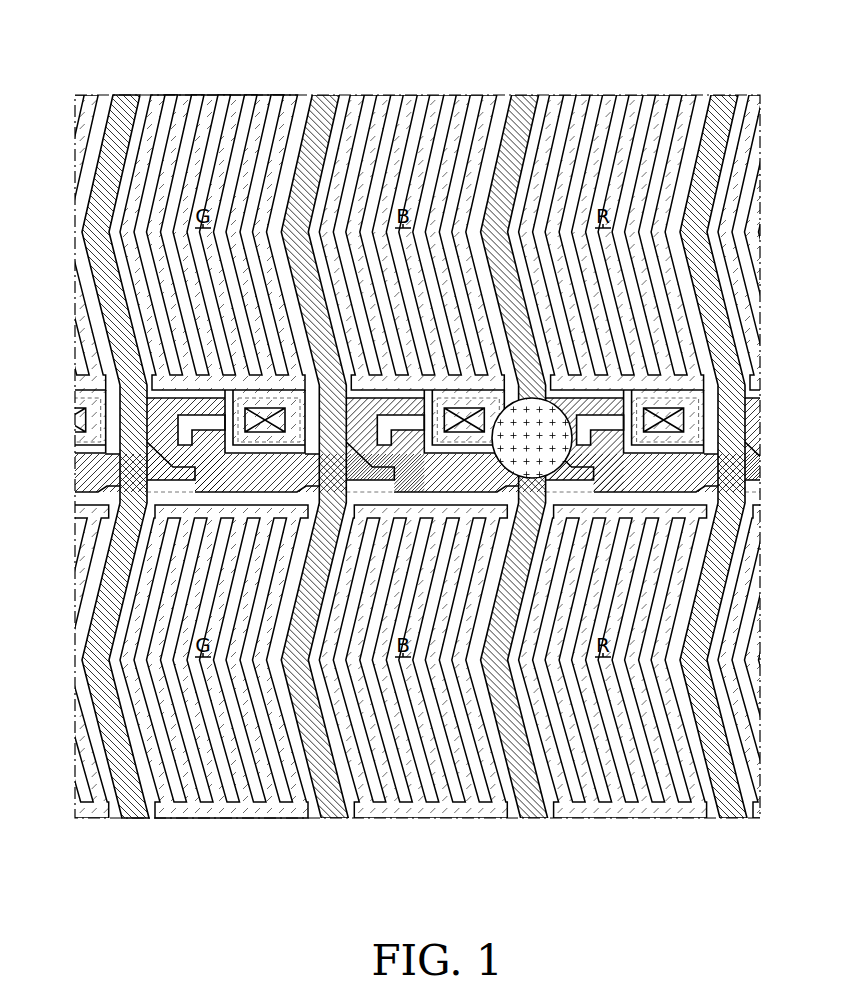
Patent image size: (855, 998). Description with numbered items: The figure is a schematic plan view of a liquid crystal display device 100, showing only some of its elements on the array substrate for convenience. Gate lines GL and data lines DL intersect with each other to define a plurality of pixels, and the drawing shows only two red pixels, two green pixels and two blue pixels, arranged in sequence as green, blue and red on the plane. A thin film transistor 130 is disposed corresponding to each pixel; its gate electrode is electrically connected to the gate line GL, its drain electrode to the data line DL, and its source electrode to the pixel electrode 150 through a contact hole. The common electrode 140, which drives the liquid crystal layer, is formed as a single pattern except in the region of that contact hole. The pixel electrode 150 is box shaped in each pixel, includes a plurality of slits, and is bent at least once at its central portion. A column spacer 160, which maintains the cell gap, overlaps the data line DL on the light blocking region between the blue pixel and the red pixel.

The liquid crystal display device 100 is at (758, 40).
The thin film transistor 130 is at (167, 487).
The common electrode 140 is at (262, 452).
The pixel electrode 150 is at (143, 733).
The column spacer 160 is at (566, 408).
The gate line GL is at (87, 473).
The data line DL is at (325, 795).